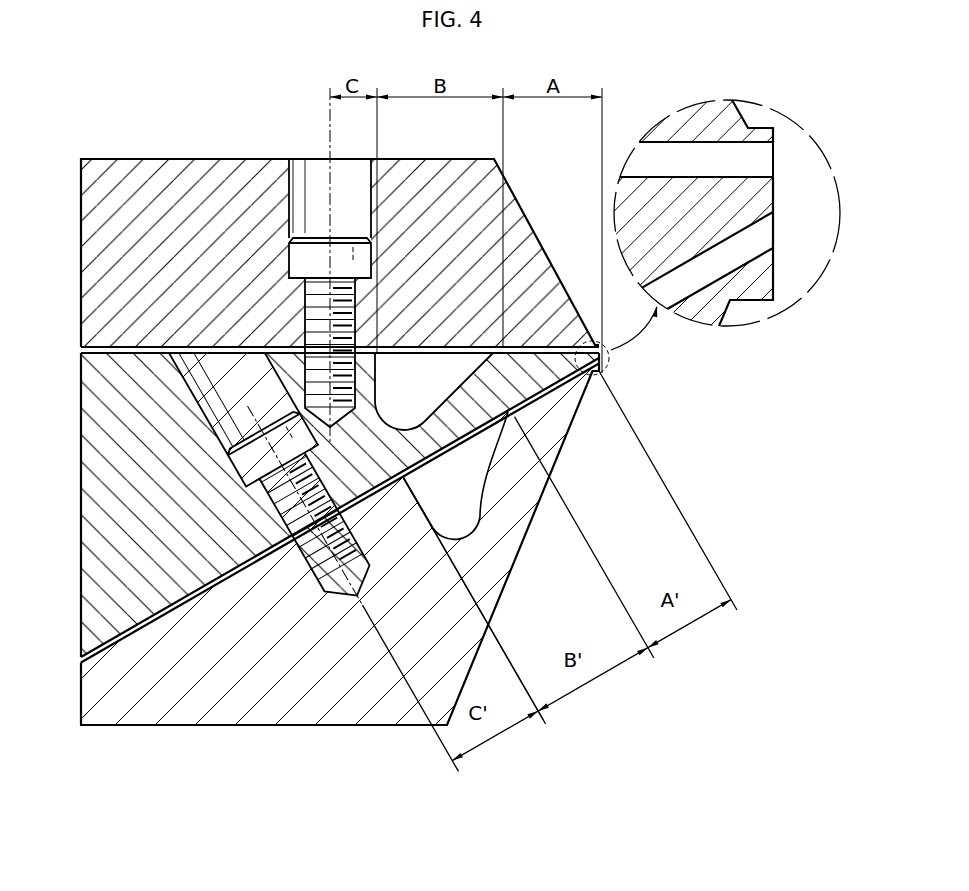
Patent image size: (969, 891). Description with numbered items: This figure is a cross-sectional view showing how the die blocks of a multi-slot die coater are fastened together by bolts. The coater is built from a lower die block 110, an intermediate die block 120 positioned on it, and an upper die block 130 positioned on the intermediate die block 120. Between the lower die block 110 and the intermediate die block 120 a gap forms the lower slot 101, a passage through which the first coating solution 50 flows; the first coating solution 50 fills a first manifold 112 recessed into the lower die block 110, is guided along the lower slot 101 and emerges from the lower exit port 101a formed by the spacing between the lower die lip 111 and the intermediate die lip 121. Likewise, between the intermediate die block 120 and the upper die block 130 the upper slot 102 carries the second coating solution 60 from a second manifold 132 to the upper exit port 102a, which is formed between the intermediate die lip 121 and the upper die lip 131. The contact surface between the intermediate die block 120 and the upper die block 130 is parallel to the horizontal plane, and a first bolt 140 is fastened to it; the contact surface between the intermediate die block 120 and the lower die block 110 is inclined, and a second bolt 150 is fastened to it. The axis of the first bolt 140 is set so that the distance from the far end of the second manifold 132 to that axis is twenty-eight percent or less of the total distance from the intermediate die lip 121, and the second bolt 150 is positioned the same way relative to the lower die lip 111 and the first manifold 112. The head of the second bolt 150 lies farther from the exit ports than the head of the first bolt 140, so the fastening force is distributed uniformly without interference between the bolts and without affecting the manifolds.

The first coating solution 50 is at (468, 503).
The second coating solution 60 is at (422, 397).
The lower slot 101 is at (533, 404).
The lower exit port 101a is at (782, 232).
The upper slot 102 is at (418, 348).
The upper exit port 102a is at (782, 160).
The lower die block 110 is at (69, 697).
The lower die lip 111 is at (763, 283).
The first manifold 112 is at (483, 478).
The intermediate die block 120 is at (69, 501).
The intermediate die lip 121 is at (760, 196).
The upper die block 130 is at (69, 253).
The upper die lip 131 is at (760, 130).
The second manifold 132 is at (460, 385).
The first bolt 140 is at (320, 252).
The second bolt 150 is at (253, 460).